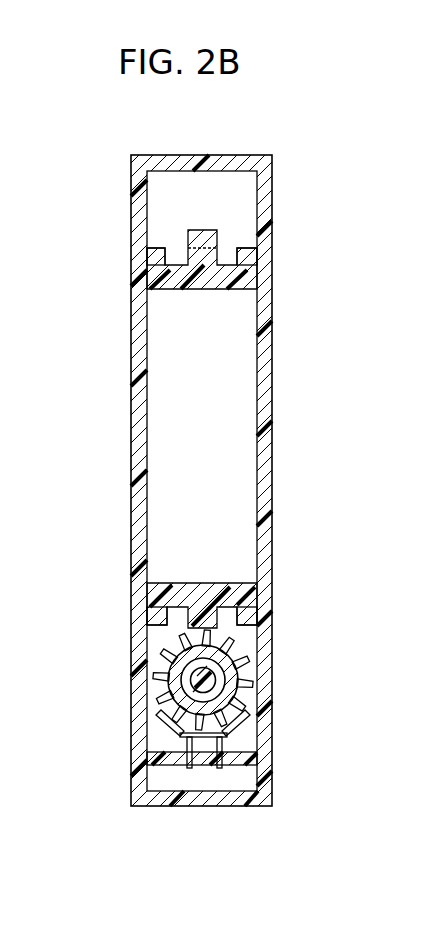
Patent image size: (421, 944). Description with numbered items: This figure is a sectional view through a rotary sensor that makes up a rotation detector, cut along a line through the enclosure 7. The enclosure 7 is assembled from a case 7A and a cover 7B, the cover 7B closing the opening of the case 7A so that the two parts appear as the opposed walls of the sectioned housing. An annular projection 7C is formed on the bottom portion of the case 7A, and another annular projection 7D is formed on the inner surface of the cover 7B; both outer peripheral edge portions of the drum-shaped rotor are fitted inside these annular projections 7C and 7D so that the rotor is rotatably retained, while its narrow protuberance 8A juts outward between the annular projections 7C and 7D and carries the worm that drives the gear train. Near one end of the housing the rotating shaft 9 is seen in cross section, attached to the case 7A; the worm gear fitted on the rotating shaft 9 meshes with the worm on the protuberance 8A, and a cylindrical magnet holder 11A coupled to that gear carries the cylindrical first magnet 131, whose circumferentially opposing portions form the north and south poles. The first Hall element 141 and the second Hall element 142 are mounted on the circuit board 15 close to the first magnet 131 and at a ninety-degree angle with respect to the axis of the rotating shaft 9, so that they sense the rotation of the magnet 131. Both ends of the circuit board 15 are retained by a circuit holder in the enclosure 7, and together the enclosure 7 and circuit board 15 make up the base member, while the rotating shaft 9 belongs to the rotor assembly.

The enclosure 7 is at (288, 377).
The case 7A is at (265, 663).
The cover 7B is at (143, 657).
The annular projection 7C is at (250, 255).
The annular projection 7D is at (160, 257).
The narrow protuberance 8A is at (200, 255).
The rotating shaft 9 is at (170, 720).
The magnet holder 11A is at (218, 690).
The first magnet 131 is at (167, 693).
The first Hall element 141 is at (147, 760).
The second Hall element 142 is at (248, 716).
The circuit board 15 is at (228, 768).